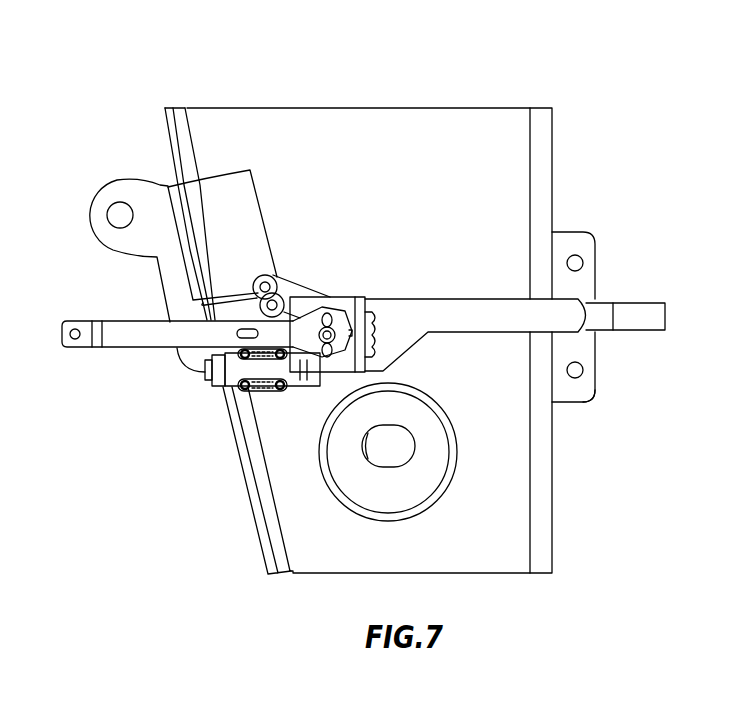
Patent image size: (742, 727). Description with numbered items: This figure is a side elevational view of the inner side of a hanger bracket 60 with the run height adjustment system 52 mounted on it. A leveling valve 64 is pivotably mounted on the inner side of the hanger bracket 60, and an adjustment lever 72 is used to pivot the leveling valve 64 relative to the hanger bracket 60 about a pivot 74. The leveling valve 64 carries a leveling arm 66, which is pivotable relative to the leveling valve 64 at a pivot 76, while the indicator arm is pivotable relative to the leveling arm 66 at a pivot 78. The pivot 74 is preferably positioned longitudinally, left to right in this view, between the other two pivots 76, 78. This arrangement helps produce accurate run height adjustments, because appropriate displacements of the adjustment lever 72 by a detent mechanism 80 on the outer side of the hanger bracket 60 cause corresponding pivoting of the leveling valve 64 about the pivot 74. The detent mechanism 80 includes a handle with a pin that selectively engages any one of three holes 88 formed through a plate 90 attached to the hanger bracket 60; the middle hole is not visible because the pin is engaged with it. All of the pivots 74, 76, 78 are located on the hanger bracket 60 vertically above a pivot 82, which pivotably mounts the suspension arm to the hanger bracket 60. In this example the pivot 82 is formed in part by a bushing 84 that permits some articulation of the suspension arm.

The run height adjustment system 52 is at (603, 83).
The hanger bracket 60 is at (433, 107).
The leveling valve 64 is at (216, 387).
The leveling arm 66 is at (138, 348).
The adjustment lever 72 is at (440, 299).
The pivot 74 is at (278, 291).
The pivot 76 is at (348, 322).
The pivot 78 is at (78, 326).
The detent mechanism 80 is at (598, 276).
The pivot 82 is at (401, 425).
The bushing 84 is at (432, 492).
The holes 88 is at (582, 260).
The plate 90 is at (590, 401).